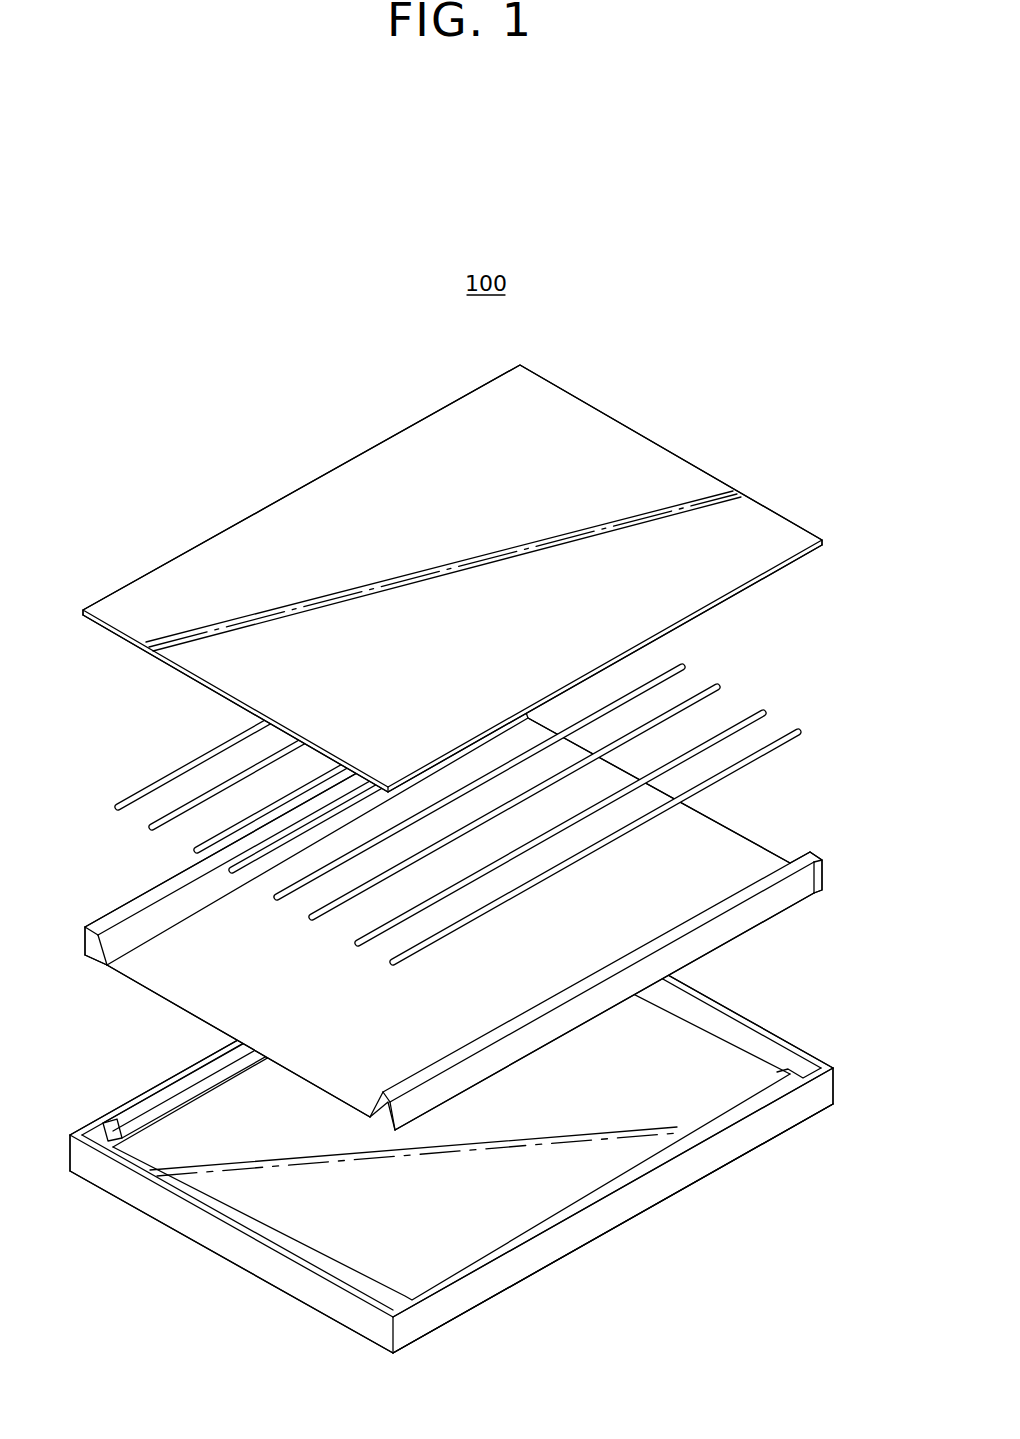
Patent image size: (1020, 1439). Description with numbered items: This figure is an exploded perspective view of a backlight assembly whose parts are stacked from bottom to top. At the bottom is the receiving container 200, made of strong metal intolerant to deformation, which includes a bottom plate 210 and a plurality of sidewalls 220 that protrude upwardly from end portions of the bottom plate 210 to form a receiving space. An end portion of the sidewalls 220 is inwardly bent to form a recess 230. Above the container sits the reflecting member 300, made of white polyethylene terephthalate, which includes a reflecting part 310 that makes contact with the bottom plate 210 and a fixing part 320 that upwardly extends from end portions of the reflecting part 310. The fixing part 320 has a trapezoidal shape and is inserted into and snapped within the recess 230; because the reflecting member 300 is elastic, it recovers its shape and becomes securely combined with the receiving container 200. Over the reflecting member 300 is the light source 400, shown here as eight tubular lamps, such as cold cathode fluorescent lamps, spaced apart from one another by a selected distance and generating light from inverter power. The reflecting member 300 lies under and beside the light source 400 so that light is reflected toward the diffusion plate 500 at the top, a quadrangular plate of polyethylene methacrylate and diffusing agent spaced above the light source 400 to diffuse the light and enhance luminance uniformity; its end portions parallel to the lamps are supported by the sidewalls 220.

The receiving container 200 is at (478, 1119).
The bottom plate 210 is at (520, 1195).
The sidewalls 220 is at (708, 1167).
The recess 230 is at (198, 1100).
The reflecting member 300 is at (469, 909).
The reflecting part 310 is at (185, 948).
The fixing part 320 is at (782, 902).
The light source 400 is at (777, 697).
The diffusion plate 500 is at (822, 530).